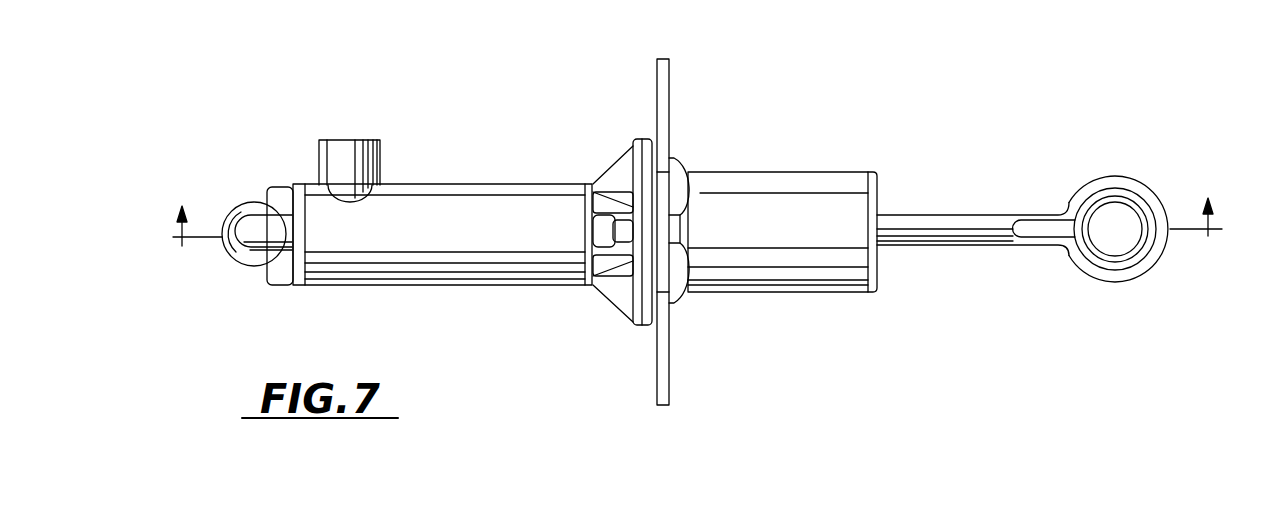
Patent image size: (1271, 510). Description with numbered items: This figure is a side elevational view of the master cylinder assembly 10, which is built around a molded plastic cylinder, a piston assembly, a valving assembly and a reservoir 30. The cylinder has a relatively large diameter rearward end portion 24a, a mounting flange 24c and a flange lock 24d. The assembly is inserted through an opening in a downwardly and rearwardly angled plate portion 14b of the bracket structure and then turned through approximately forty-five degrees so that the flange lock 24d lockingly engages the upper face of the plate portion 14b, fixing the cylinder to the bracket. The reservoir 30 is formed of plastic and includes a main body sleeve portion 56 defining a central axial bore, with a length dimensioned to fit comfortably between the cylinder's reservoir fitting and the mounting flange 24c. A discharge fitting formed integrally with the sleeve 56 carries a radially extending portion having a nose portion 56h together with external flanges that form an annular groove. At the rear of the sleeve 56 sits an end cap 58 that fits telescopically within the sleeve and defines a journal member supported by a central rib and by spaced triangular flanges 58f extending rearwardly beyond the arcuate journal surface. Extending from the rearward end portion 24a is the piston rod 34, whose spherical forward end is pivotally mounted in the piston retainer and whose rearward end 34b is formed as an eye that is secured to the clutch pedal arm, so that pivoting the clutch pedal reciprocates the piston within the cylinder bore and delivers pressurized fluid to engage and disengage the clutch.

The master cylinder assembly 10 is at (702, 205).
The plate portion 14b is at (665, 85).
The rearward end portion 24a is at (818, 172).
The mounting flange 24c is at (640, 326).
The flange lock 24d is at (682, 160).
The reservoir 30 is at (486, 180).
The piston rod 34 is at (962, 207).
The rearward end 34b is at (1137, 177).
The main body sleeve portion 56 is at (255, 260).
The nose portion 56h is at (357, 140).
The end cap 58 is at (582, 214).
The triangular flanges 58f is at (610, 281).